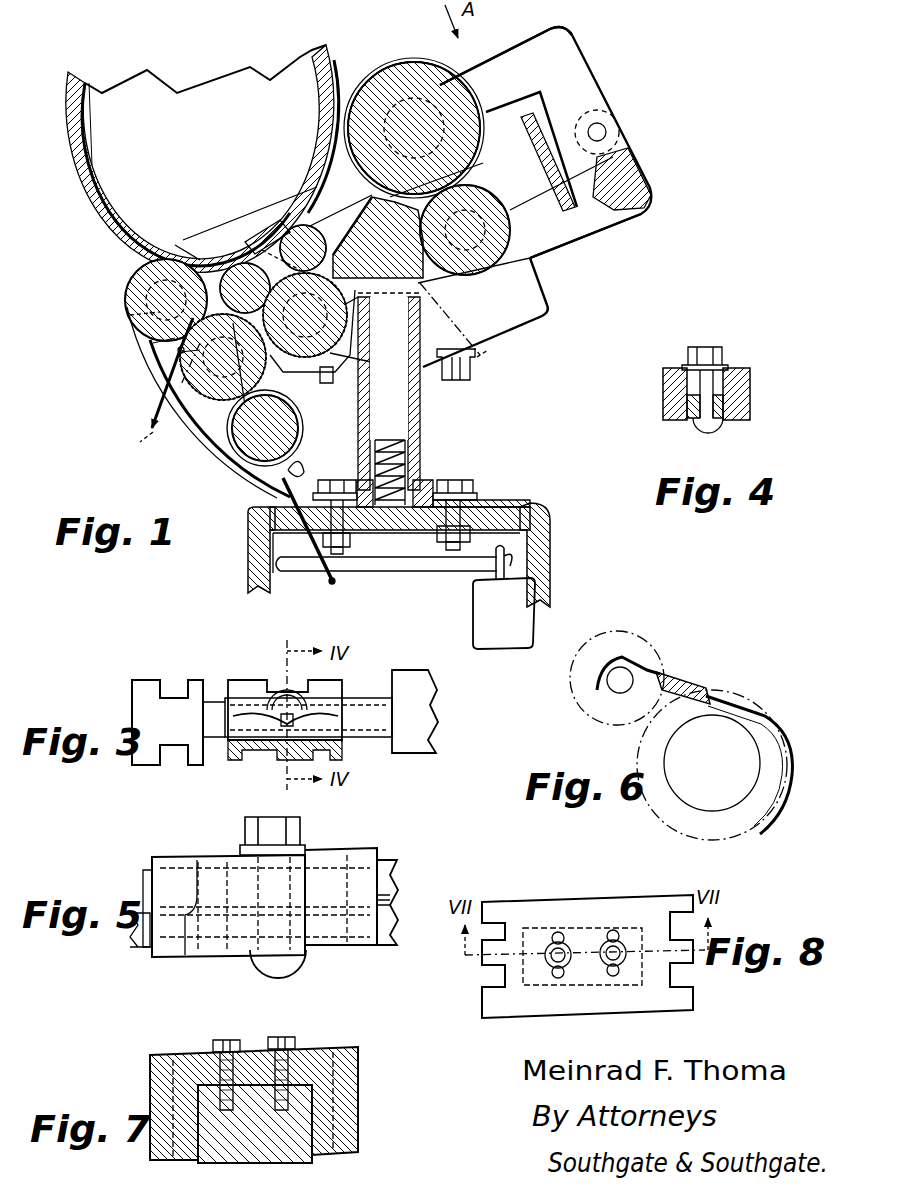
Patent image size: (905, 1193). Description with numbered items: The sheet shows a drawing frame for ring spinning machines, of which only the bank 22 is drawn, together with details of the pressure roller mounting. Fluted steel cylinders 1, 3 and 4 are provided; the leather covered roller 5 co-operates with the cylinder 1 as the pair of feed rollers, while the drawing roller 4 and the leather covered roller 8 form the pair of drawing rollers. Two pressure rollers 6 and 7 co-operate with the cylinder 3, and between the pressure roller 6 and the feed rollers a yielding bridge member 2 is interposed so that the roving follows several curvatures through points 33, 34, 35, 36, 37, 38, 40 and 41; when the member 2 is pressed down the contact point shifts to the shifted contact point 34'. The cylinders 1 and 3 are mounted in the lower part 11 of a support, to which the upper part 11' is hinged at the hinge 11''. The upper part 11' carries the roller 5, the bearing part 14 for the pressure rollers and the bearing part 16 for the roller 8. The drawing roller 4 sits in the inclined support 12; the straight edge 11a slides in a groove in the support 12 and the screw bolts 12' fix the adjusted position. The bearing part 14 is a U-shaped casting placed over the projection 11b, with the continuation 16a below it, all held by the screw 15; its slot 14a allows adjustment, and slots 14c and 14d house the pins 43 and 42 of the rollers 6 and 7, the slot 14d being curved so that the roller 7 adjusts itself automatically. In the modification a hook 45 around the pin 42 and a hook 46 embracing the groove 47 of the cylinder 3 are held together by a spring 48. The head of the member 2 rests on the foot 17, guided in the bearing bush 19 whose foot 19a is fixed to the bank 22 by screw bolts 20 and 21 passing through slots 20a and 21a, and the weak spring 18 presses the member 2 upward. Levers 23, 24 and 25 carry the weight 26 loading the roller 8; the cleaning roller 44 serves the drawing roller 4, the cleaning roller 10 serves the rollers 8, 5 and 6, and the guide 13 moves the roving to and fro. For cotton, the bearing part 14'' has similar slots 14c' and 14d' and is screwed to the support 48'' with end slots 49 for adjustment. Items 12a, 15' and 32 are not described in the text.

In FIG. 1, the steel cylinder 1 is at (542, 262).
In FIG. 1, the bridge member 2 is at (375, 391).
In FIG. 1, the steel cylinder 3 is at (322, 346).
In FIG. 6, the steel cylinder 3 is at (650, 812).
In FIG. 1, the drawing roller 4 is at (200, 397).
In FIG. 1, the leather covered roller 5 is at (412, 64).
In FIG. 1, the pressure roller 6 is at (296, 226).
In FIG. 1, the pressure roller 7 is at (212, 260).
In FIG. 6, the pressure roller 7 is at (664, 654).
In FIG. 1, the leather covered roller 8 is at (128, 276).
In FIG. 1, the cleaning roller 10 is at (78, 160).
In FIG. 1, the lower part of support 11 is at (592, 236).
In FIG. 1, the upper part of support 11' is at (538, 56).
In FIG. 3, the upper part of support 11' is at (420, 694).
In FIG. 1, the hinge 11'' is at (628, 121).
In FIG. 1, the straight edge 11a is at (652, 184).
In FIG. 3, the projection 11b is at (368, 698).
In FIG. 4, the projection 11b is at (748, 392).
In FIG. 5, the projection 11b is at (392, 870).
In FIG. 1, the inclined support 12 is at (494, 312).
In FIG. 1, the screw bolt 12' is at (474, 377).
In FIG. 1, the bolt axis 12a is at (492, 348).
In FIG. 1, the guide 13 is at (526, 131).
In FIG. 1, the bearing part 14 is at (250, 207).
In FIG. 3, the bearing part 14 is at (278, 737).
In FIG. 4, the bearing part 14 is at (719, 376).
In FIG. 5, the bearing part 14 is at (253, 902).
In FIG. 7, the bearing part 14'' is at (261, 1087).
In FIG. 8, the bearing part 14'' is at (585, 942).
In FIG. 3, the slot 14a is at (338, 716).
In FIG. 3, the slot 14c is at (366, 697).
In FIG. 5, the slot 14c is at (333, 881).
In FIG. 8, the slot 14c' is at (686, 892).
In FIG. 3, the slot 14d is at (243, 715).
In FIG. 5, the slot 14d is at (212, 929).
In FIG. 8, the slot 14d' is at (725, 991).
In FIG. 3, the screw 15 is at (278, 715).
In FIG. 4, the screw 15 is at (705, 364).
In FIG. 5, the screw 15 is at (286, 882).
In FIG. 1, the bolt 15' is at (232, 179).
In FIG. 1, the bearing part 16 is at (130, 316).
In FIG. 3, the bearing part 16 is at (146, 684).
In FIG. 3, the continuation of bearing part 16a is at (222, 750).
In FIG. 4, the continuation of bearing part 16a is at (722, 420).
In FIG. 5, the continuation of bearing part 16a is at (390, 938).
In FIG. 1, the foot 17 is at (394, 406).
In FIG. 1, the spring 18 is at (370, 458).
In FIG. 1, the bearing bush 19 is at (420, 462).
In FIG. 1, the foot 19a is at (484, 502).
In FIG. 1, the screw bolt 20 is at (458, 478).
In FIG. 1, the slot 20a is at (437, 534).
In FIG. 1, the screw bolt 21 is at (335, 480).
In FIG. 1, the slot 21a is at (446, 534).
In FIG. 1, the bank 22 is at (550, 522).
In FIG. 1, the lever 23 is at (222, 462).
In FIG. 1, the lever 24 is at (334, 584).
In FIG. 1, the lever 25 is at (412, 572).
In FIG. 1, the weight 26 is at (504, 598).
In FIG. 1, the roller 32 is at (480, 198).
In FIG. 1, the contact point 33 is at (455, 108).
In FIG. 1, the contact point 34 is at (283, 210).
In FIG. 1, the shifted contact point 34' is at (309, 146).
In FIG. 1, the curvature point 35 is at (298, 364).
In FIG. 1, the curvature point 36 is at (250, 262).
In FIG. 1, the curvature point 37 is at (232, 392).
In FIG. 1, the curvature point 38 is at (176, 244).
In FIG. 1, the curvature point 40 is at (153, 343).
In FIG. 1, the curvature point 41 is at (180, 352).
In FIG. 1, the pin 42 is at (156, 430).
In FIG. 6, the pin 42 is at (606, 684).
In FIG. 1, the pin 43 is at (286, 226).
In FIG. 1, the cleaning roller 44 is at (250, 452).
In FIG. 6, the hook 45 is at (620, 656).
In FIG. 6, the hook 46 is at (772, 724).
In FIG. 6, the groove 47 is at (768, 808).
In FIG. 6, the spring 48 is at (697, 674).
In FIG. 7, the support 48'' is at (294, 1133).
In FIG. 7, the end slot 49 is at (268, 1052).
In FIG. 8, the end slot 49 is at (610, 930).